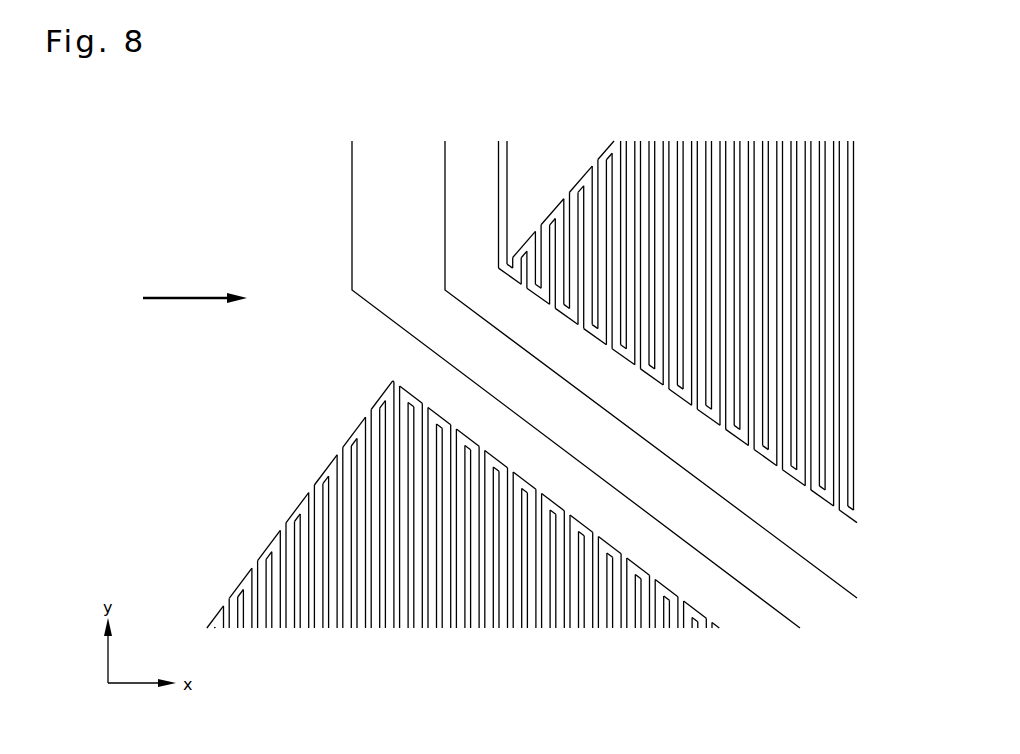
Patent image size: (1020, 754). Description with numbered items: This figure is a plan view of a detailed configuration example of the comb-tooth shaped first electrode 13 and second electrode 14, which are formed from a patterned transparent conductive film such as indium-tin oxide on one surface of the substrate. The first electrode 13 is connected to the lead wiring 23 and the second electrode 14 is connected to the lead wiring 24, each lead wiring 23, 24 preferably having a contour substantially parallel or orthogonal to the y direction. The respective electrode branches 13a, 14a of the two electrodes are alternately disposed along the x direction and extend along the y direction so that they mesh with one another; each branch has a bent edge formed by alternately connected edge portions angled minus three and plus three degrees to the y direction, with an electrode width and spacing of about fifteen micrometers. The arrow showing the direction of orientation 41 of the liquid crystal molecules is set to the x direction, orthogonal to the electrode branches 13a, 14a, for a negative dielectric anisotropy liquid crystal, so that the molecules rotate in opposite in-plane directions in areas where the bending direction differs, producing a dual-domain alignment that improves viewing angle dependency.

The first electrode 13 is at (678, 264).
The electrode branch 13a is at (597, 173).
The second electrode 14 is at (476, 348).
The electrode branch 14a is at (522, 287).
The lead wiring 23 is at (518, 182).
The lead wiring 24 is at (458, 218).
The direction of orientation 41 is at (192, 298).